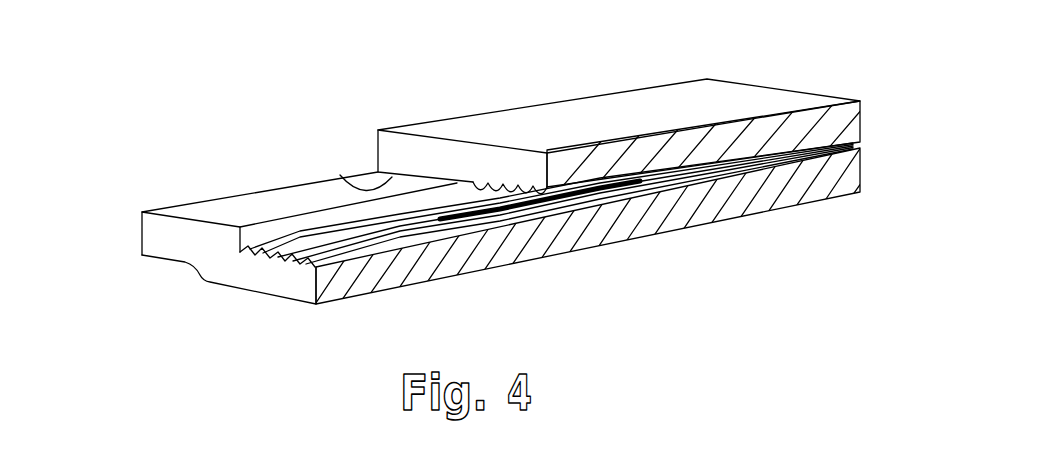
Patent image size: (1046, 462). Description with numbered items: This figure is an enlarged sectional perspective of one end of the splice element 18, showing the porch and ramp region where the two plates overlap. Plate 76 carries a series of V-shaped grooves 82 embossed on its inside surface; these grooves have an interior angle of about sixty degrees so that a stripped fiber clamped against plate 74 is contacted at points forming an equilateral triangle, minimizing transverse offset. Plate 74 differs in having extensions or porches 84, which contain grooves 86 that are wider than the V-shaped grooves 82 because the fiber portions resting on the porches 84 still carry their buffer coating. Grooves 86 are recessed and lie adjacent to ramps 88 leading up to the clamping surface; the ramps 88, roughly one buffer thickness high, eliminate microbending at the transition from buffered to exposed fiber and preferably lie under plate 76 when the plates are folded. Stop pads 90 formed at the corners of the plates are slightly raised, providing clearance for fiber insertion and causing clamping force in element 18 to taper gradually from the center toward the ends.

The splice element 18 is at (270, 100).
The plate 74 is at (855, 167).
The plate 76 is at (852, 119).
The V-shaped grooves 82 is at (477, 182).
The porches 84 is at (150, 234).
The grooves 86 is at (300, 264).
The ramps 88 is at (657, 187).
The stop pads 90 is at (340, 175).